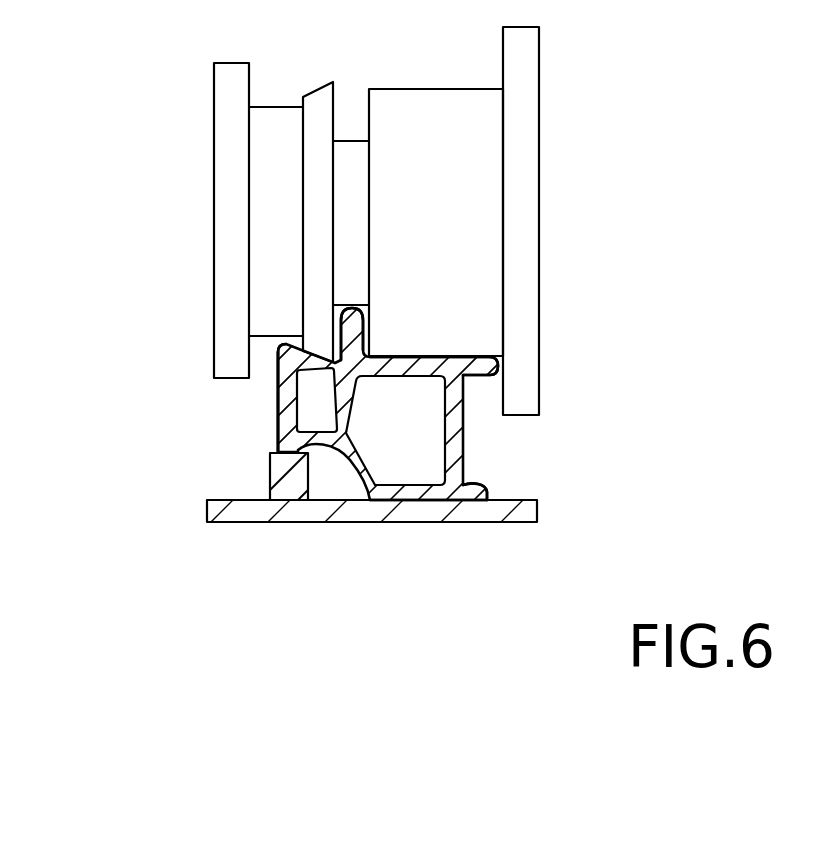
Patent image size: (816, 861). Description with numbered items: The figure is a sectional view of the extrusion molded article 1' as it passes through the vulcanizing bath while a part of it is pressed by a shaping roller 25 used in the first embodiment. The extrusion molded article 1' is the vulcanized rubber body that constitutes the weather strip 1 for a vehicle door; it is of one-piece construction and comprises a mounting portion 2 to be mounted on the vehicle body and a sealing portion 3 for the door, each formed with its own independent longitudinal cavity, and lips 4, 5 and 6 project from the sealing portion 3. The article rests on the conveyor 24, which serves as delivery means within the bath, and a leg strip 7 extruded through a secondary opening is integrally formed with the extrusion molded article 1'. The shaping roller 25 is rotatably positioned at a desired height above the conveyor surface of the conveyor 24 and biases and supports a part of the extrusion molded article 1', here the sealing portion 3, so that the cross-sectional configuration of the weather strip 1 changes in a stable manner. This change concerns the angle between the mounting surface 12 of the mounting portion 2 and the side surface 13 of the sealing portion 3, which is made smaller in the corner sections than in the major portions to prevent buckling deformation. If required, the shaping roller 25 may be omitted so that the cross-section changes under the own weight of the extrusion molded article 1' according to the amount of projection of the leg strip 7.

The extrusion molded article 1' is at (380, 417).
The weather strip 1 is at (380, 417).
The mounting portion 2 is at (287, 378).
The sealing portion 3 is at (412, 357).
The lip 4 is at (477, 495).
The lip 5 is at (500, 370).
The lip 6 is at (352, 312).
The leg strip 7 is at (272, 470).
The mounting surface 12 is at (278, 407).
The side surface 13 is at (410, 502).
The conveyor 24 is at (477, 517).
The shaping roller 25 is at (441, 102).